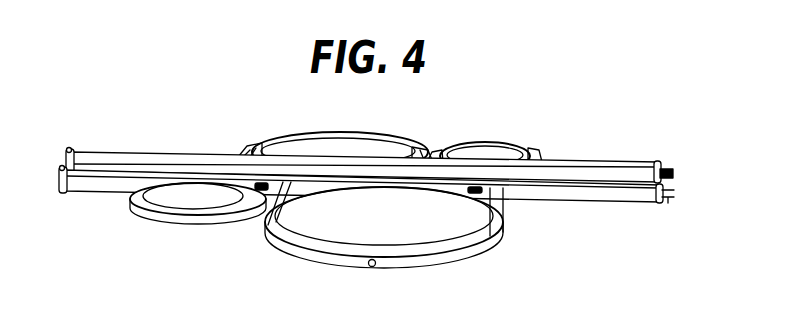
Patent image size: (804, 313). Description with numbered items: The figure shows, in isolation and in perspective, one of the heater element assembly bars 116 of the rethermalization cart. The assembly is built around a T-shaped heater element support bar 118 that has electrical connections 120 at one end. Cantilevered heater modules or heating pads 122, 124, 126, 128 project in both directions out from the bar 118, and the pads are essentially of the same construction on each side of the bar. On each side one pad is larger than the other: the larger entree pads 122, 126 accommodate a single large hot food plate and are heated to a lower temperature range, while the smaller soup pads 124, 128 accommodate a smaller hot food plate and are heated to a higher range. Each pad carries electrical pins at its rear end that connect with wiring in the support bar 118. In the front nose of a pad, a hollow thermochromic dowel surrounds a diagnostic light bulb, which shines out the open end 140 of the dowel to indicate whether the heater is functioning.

The heater element assembly bar 116 is at (514, 95).
The heater element support bar 118 is at (90, 177).
The electrical connections 120 is at (668, 203).
The heater pad 122 is at (398, 233).
The heater pad 124 is at (202, 200).
The heater pad 126 is at (375, 143).
The heater pad 128 is at (510, 140).
The dowel end 140 is at (370, 268).